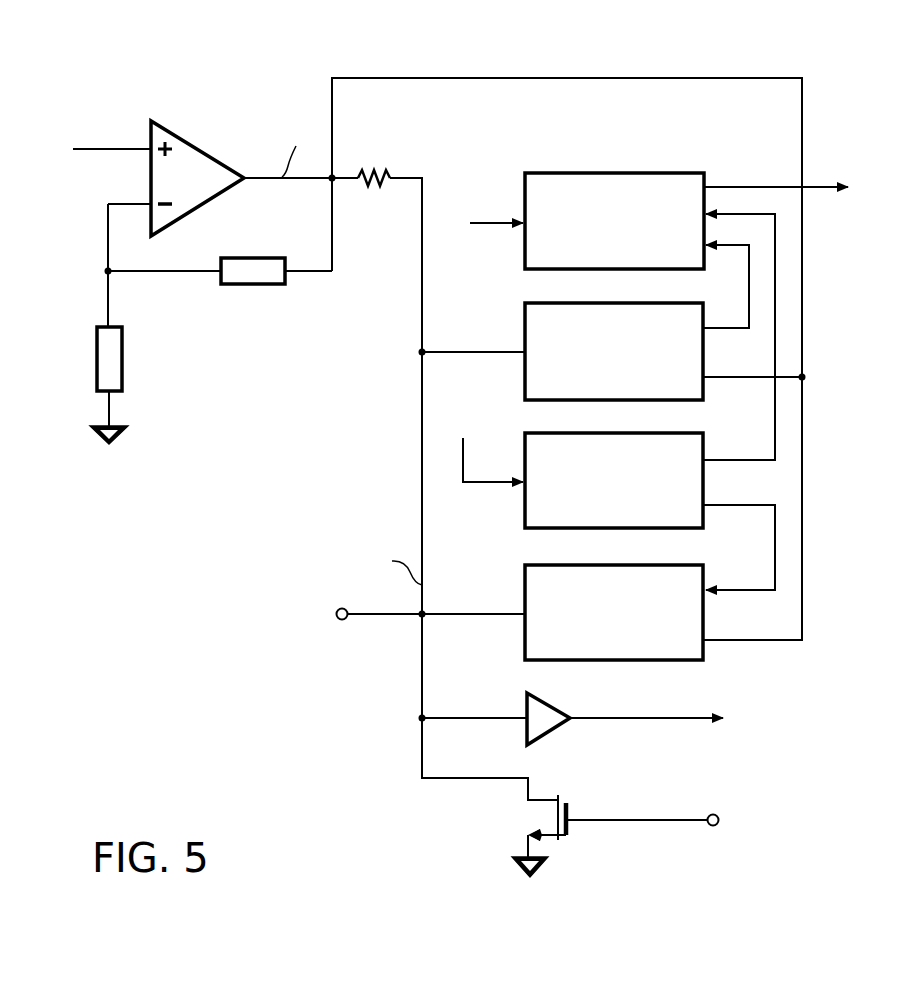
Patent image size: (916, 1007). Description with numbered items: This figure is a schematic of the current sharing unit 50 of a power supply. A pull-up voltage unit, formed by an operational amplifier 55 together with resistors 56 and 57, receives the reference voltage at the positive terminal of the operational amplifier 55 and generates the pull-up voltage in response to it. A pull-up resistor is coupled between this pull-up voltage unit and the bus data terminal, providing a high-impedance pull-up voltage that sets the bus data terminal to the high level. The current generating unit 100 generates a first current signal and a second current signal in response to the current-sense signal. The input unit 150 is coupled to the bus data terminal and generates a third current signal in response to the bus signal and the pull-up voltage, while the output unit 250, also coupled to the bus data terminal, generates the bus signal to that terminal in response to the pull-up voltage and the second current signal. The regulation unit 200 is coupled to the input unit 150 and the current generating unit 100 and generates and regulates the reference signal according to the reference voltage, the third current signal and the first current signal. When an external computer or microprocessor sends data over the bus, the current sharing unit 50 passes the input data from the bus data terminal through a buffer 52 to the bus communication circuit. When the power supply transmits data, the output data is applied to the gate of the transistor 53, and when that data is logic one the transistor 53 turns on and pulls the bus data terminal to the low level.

The current sharing unit 50 is at (803, 42).
The operational amplifier 55 is at (192, 140).
The resistor 56 is at (247, 290).
The resistor 57 is at (122, 365).
The regulation unit 200 is at (523, 188).
The input unit 150 is at (523, 316).
The current generating unit 100 is at (523, 520).
The output unit 250 is at (523, 640).
The buffer 52 is at (550, 738).
The transistor 53 is at (527, 815).